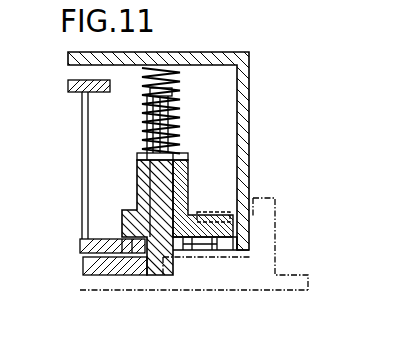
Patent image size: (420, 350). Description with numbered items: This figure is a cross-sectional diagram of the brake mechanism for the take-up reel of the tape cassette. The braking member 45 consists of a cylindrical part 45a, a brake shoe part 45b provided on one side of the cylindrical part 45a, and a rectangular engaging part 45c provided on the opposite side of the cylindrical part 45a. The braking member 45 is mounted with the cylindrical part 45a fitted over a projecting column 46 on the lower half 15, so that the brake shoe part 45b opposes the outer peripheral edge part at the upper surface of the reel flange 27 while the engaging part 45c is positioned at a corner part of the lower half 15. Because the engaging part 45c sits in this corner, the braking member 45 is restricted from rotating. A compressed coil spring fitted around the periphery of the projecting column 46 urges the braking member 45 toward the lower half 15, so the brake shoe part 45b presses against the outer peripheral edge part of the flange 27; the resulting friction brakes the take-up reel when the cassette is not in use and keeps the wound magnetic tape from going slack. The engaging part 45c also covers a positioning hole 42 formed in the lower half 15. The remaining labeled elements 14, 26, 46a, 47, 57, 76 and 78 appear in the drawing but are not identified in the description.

The housing top wall 14 is at (218, 52).
The support rod 26 is at (72, 91).
The reel flange 27 is at (80, 246).
The braking member 45 is at (137, 185).
The cylindrical part 45a is at (183, 172).
The brake shoe part 45b is at (119, 255).
The engaging part 45c is at (230, 224).
The projecting column 46 is at (168, 194).
The upper end of slider 46a is at (177, 78).
The coil spring 47 is at (172, 93).
The lower half 15 is at (150, 257).
The pin 78 is at (197, 255).
The positioning hole 42 is at (207, 253).
The lead wire 57 is at (236, 253).
The substrate 76 is at (232, 288).